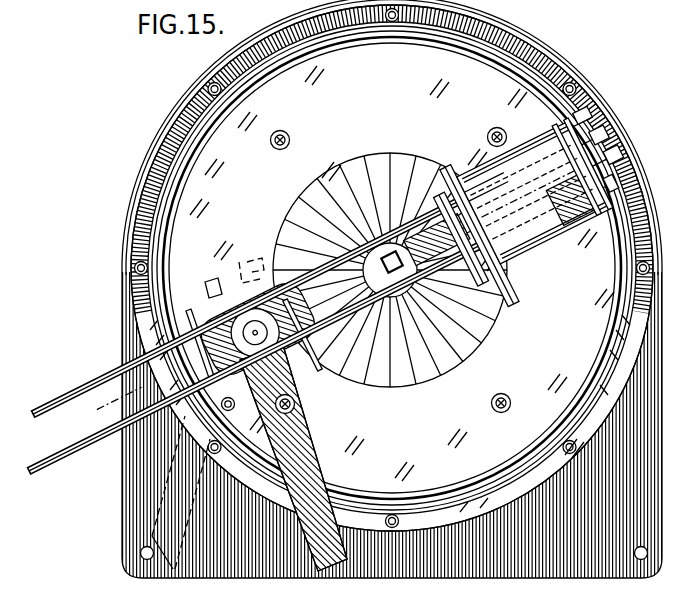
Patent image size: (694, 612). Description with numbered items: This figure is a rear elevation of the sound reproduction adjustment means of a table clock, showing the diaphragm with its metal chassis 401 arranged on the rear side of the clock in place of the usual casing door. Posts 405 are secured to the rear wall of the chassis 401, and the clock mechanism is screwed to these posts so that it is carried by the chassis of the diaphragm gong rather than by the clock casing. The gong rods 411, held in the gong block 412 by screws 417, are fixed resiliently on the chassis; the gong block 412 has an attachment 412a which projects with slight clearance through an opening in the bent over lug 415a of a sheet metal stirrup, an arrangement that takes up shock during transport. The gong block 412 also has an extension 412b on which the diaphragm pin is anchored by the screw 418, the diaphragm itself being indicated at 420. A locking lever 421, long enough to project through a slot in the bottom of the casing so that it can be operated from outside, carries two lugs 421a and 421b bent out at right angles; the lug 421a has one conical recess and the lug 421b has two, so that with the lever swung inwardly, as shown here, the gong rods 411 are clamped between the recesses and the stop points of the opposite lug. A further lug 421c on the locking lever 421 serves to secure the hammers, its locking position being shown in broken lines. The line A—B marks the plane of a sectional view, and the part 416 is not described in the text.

The chassis 401 is at (630, 297).
The posts 405 is at (300, 125).
The gong rods 411 is at (100, 443).
The gong block 412 is at (528, 194).
The attachment 412a is at (522, 170).
The extension 412b is at (572, 203).
The bent over lug 415a is at (480, 283).
The connector 416 is at (606, 128).
The screws 417 is at (588, 122).
The screw 418 is at (347, 203).
The diaphragm 420 is at (385, 178).
The locking lever 421 is at (306, 558).
The lug 421a is at (187, 313).
The lug 421b is at (285, 372).
The further lug 421c is at (247, 267).
The section line A—B A is at (117, 404).
The section line A— B is at (613, 161).